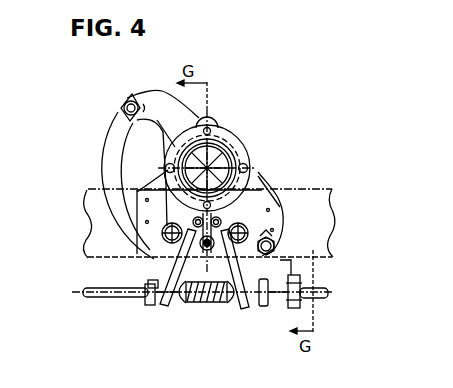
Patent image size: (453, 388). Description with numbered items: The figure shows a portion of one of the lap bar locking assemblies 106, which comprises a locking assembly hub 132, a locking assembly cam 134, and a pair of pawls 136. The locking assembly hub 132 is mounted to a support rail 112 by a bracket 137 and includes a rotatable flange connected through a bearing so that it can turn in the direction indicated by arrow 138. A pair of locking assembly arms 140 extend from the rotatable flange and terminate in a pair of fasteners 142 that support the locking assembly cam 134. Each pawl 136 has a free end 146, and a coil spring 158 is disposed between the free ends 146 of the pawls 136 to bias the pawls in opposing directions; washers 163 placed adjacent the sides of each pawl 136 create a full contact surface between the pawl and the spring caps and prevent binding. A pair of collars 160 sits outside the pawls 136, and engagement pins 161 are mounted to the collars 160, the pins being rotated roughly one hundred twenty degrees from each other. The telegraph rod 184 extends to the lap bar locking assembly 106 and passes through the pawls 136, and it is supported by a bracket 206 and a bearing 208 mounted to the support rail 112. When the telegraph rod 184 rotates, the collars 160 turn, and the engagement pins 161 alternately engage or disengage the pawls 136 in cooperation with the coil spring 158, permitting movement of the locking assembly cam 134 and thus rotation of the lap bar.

The lap bar locking assembly 106 is at (223, 119).
The support rail 112 is at (308, 192).
The locking assembly hub 132 is at (247, 156).
The locking assembly cam 134 is at (103, 195).
The pawl 136 is at (166, 311).
The bracket 137 is at (147, 176).
The arrow 138 is at (160, 92).
The locking assembly arm 140 is at (270, 207).
The fastener 142 is at (272, 245).
The free end 146 is at (167, 309).
The coil spring 158 is at (215, 305).
The collar 160 is at (143, 301).
The engagement pin 161 is at (155, 283).
The washer 163 is at (163, 309).
The telegraph rod 184 is at (92, 290).
The bracket 206 is at (296, 271).
The bearing 208 is at (297, 305).